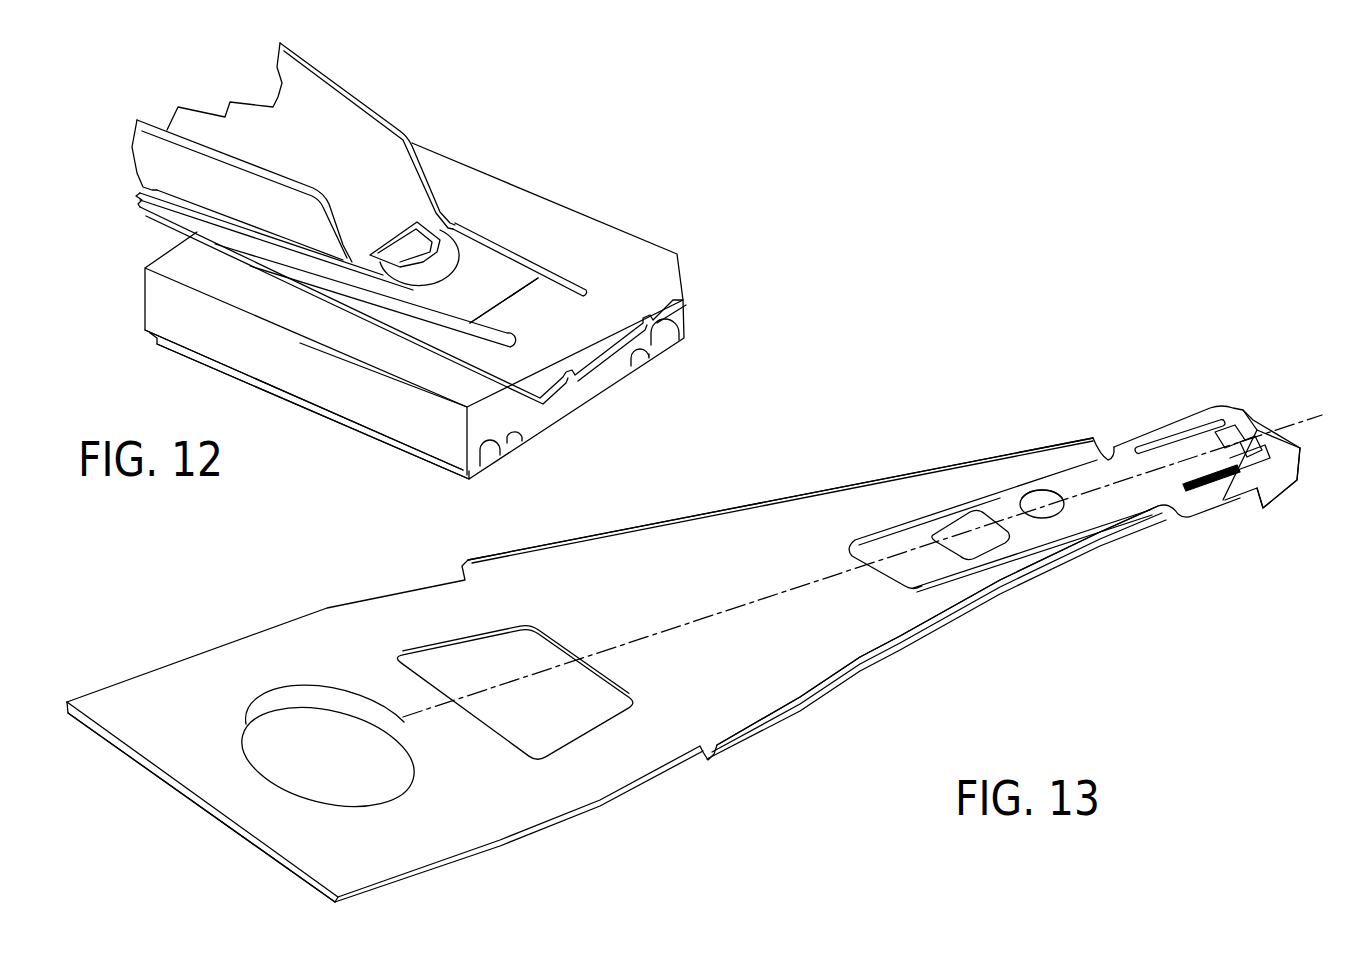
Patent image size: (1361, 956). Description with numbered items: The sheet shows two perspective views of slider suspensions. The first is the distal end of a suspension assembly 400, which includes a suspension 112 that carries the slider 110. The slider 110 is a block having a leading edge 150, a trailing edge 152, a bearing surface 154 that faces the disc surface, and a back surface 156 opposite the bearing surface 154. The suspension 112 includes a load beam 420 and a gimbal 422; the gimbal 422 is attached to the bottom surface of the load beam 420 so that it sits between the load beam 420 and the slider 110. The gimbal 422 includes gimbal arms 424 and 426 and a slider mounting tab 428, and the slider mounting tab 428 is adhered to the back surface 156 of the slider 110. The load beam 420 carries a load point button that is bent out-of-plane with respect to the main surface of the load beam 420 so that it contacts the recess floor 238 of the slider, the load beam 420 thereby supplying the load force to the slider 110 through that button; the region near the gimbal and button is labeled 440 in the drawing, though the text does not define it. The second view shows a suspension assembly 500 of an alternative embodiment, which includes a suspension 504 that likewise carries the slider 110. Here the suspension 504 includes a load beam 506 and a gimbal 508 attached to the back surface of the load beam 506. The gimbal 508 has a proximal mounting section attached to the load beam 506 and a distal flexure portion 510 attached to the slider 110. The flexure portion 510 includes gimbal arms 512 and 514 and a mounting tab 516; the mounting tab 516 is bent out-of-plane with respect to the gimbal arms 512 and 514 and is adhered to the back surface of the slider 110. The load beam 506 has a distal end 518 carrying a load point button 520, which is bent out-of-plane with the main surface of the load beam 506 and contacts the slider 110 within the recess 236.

In FIG. 12, the suspension assembly 400 is at (733, 112).
In FIG. 12, the suspension 112 is at (493, 116).
In FIG. 12, the slider 110 is at (542, 187).
In FIG. 13, the slider 110 is at (1268, 482).
In FIG. 12, the leading edge 150 is at (145, 262).
In FIG. 12, the trailing edge 152 is at (523, 417).
In FIG. 12, the bearing surface 154 is at (345, 418).
In FIG. 12, the back surface 156 is at (310, 323).
In FIG. 12, the load beam 420 is at (368, 86).
In FIG. 12, the gimbal 422 is at (616, 259).
In FIG. 12, the gimbal arm 424 is at (297, 258).
In FIG. 12, the gimbal arm 426 is at (540, 250).
In FIG. 12, the slider mounting tab 428 is at (513, 302).
In FIG. 12, the clip bracket 440 is at (410, 256).
In FIG. 12, the recess 236 is at (413, 296).
In FIG. 12, the recess floor 238 is at (433, 273).
In FIG. 13, the suspension assembly 500 is at (1000, 505).
In FIG. 13, the suspension 504 is at (1033, 606).
In FIG. 13, the load beam 506 is at (884, 470).
In FIG. 13, the gimbal 508 is at (1078, 458).
In FIG. 13, the flexure portion 510 is at (1153, 410).
In FIG. 13, the gimbal arm 512 is at (1195, 425).
In FIG. 13, the gimbal arm 514 is at (1212, 492).
In FIG. 13, the mounting tab 516 is at (1247, 440).
In FIG. 13, the distal end 518 is at (1220, 430).
In FIG. 13, the load point button 520 is at (1240, 424).